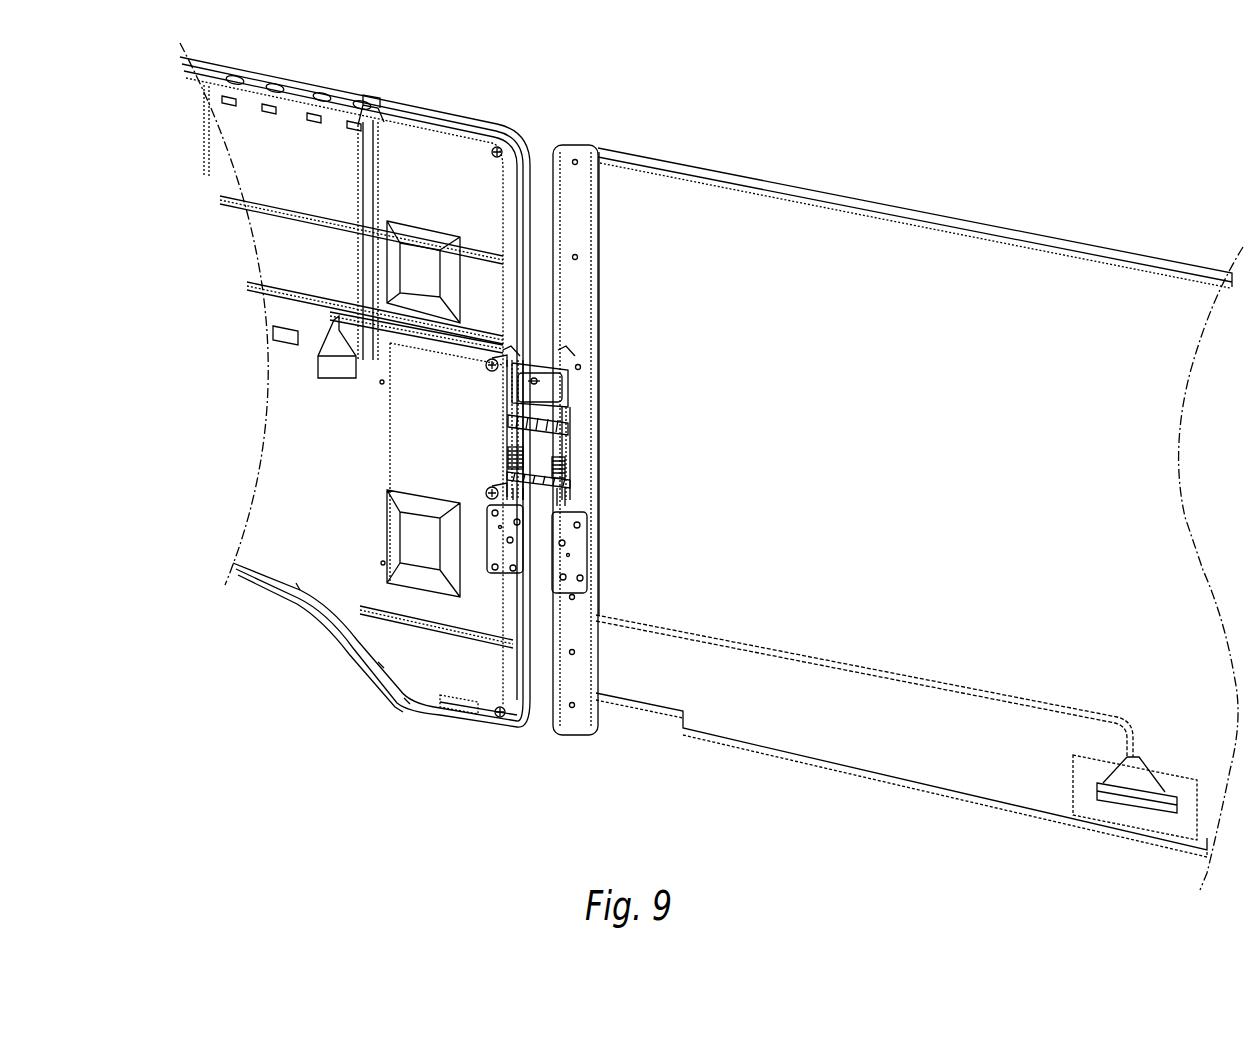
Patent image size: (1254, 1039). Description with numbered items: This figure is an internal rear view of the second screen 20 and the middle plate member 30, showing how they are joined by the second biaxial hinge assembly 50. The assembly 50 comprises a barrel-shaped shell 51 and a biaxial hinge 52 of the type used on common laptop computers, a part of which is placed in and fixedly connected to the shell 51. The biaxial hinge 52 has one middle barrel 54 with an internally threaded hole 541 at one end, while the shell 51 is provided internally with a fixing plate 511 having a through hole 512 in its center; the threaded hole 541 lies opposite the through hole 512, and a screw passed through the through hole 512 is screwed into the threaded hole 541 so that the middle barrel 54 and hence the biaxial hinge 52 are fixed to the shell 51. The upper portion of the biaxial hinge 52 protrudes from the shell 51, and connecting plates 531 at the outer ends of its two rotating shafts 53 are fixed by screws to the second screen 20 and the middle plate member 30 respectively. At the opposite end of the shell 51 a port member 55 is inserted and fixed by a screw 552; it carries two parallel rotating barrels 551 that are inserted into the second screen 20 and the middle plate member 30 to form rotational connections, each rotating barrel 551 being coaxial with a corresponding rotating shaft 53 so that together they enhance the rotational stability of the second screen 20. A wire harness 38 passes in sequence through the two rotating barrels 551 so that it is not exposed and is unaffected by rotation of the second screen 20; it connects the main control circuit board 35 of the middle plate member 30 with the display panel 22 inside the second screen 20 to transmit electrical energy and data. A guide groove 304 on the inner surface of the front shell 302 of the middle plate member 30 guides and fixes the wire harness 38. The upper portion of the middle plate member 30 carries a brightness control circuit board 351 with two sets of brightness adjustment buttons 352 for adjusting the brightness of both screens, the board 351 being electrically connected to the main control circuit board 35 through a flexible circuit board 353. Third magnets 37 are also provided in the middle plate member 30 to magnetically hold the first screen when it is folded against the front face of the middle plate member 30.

The second screen 20 is at (827, 197).
The display panel 22 is at (1060, 280).
The middle plate member 30 is at (363, 677).
The front shell 302 is at (293, 233).
The guide groove 304 is at (437, 337).
The main control circuit board 35 is at (267, 517).
The brightness control circuit board 351 is at (295, 103).
The brightness adjustment buttons 352 is at (357, 123).
The flexible circuit board 353 is at (380, 172).
The third magnets 37 is at (410, 260).
The wire harness 38 is at (403, 330).
The second biaxial hinge assembly 50 is at (770, 242).
The barrel-shaped shell 51 is at (573, 402).
The fixing plate 511 is at (530, 432).
The through hole 512 is at (527, 427).
The biaxial hinge 52 is at (535, 468).
The rotating shafts 53 is at (530, 495).
The connecting plates 531 is at (510, 560).
The middle barrel 54 is at (547, 448).
The internally threaded hole 541 is at (528, 488).
The port member 55 is at (547, 380).
The rotating barrels 551 is at (510, 352).
The screw 552 is at (495, 378).